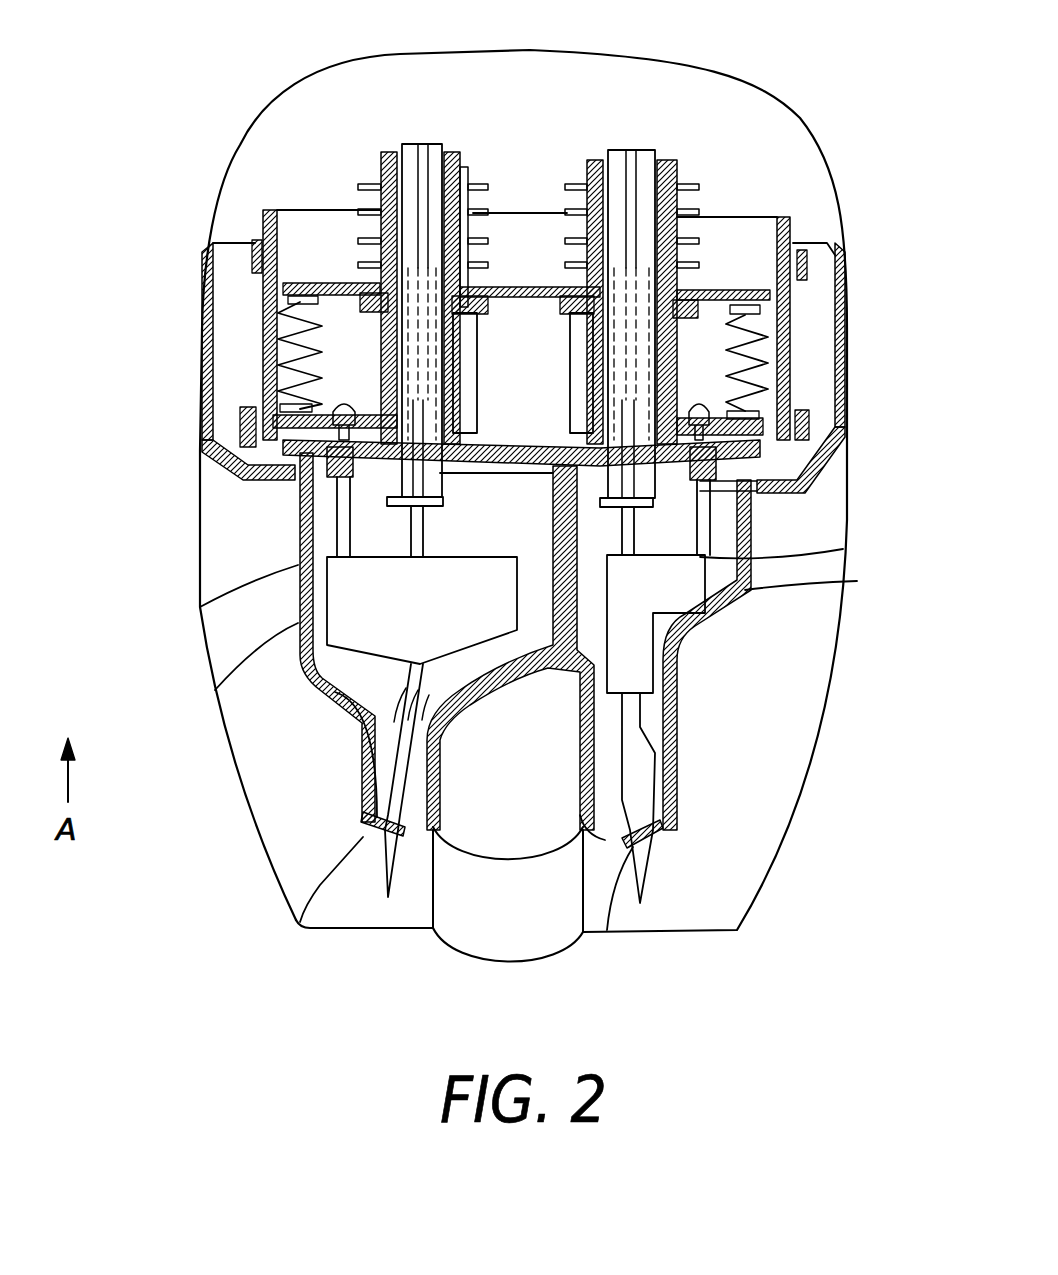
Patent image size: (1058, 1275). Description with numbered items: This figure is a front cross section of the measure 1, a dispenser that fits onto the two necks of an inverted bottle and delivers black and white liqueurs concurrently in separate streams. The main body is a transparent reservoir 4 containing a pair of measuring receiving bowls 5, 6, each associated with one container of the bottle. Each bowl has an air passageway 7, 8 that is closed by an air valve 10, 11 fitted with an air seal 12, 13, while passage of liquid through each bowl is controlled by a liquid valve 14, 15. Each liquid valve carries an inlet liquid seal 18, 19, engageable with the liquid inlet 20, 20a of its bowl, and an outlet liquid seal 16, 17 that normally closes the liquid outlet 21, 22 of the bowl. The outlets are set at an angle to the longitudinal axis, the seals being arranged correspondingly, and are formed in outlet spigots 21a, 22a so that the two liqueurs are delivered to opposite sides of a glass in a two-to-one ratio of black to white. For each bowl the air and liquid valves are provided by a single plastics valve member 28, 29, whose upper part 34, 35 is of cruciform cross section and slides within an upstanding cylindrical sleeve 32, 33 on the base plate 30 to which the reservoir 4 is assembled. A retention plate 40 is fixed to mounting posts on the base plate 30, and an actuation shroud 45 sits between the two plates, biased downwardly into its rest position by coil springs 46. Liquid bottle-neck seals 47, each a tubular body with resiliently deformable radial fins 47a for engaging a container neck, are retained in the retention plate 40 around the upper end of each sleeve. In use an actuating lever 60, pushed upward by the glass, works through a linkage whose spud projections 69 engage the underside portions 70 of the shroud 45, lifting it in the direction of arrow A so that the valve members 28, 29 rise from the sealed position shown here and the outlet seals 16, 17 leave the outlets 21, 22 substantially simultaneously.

The measure 1 is at (876, 261).
The reservoir 4 is at (200, 606).
The measuring receiving bowl 5 is at (215, 690).
The measuring receiving bowl 6 is at (810, 584).
The air passageway 7 is at (366, 422).
The air passageway 8 is at (686, 418).
The air valve 10 is at (293, 513).
The air valve 11 is at (813, 552).
The air seal 12 is at (300, 502).
The air seal 13 is at (748, 508).
The liquid valve 14 is at (437, 170).
The liquid valve 15 is at (643, 163).
The outlet liquid seal 16 is at (363, 830).
The outlet liquid seal 17 is at (610, 932).
The inlet liquid seal 18 is at (370, 557).
The inlet liquid seal 19 is at (553, 528).
The liquid inlet 20 is at (447, 470).
The liquid inlet 20a is at (636, 523).
The liquid outlet 21 is at (320, 927).
The outlet spigot 21a is at (362, 775).
The liquid outlet 22 is at (665, 850).
The outlet spigot 22a is at (670, 782).
The valve member 28 is at (323, 692).
The valve member 29 is at (697, 593).
The base plate 30 is at (500, 453).
The cylindrical sleeve 32 is at (387, 322).
The cylindrical sleeve 33 is at (570, 350).
The upper part of liquid valve 34 is at (432, 212).
The upper part of liquid valve 35 is at (677, 187).
The retention plate 40 is at (327, 282).
The actuation shroud 45 is at (797, 223).
The coil spring 46 is at (290, 340).
The liquid bottle-neck seal 47 is at (585, 190).
The radial fin 47a is at (563, 190).
The actuating lever 60 is at (450, 953).
The spud projection 69 is at (843, 420).
The underside portion of shroud 70 is at (258, 407).